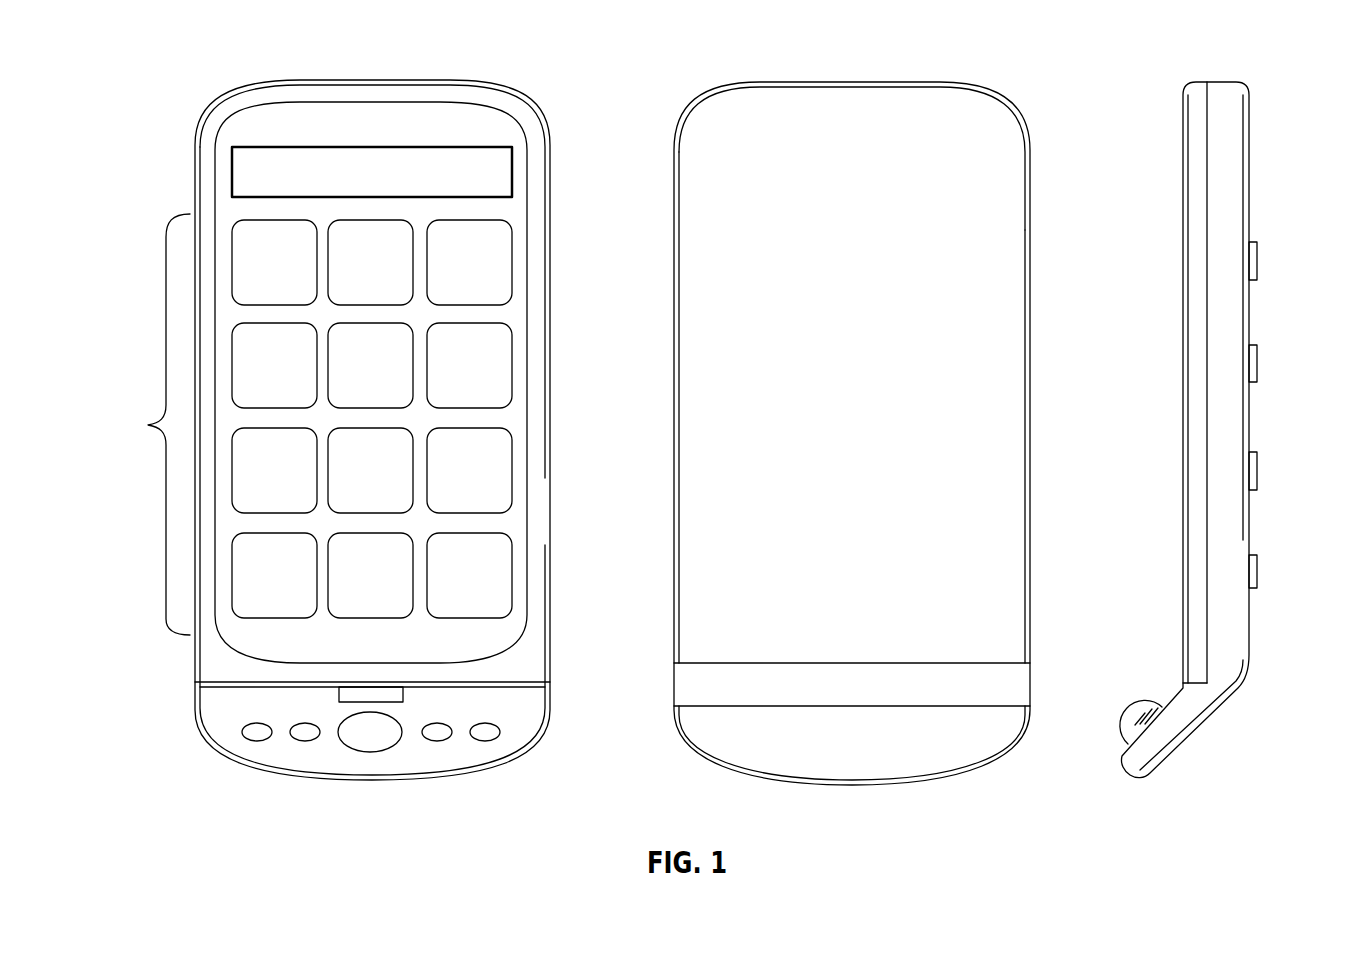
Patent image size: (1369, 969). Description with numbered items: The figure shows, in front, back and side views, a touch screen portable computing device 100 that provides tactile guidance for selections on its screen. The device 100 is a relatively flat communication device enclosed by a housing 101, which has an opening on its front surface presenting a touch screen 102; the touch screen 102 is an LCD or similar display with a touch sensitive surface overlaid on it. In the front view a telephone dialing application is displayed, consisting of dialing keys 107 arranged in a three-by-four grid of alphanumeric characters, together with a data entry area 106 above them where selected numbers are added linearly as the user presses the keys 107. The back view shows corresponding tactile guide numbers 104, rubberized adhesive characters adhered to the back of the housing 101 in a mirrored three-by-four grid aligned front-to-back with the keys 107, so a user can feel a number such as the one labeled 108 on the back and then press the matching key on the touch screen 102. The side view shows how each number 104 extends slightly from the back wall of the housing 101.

The touch screen portable computing device 100 is at (278, 86).
The housing 101 is at (442, 92).
The touch screen 102 is at (505, 316).
The tactile guide numbers 104 is at (957, 257).
The data entry area 106 is at (232, 172).
The dialing keys 107 is at (364, 407).
The key 108 is at (258, 255).